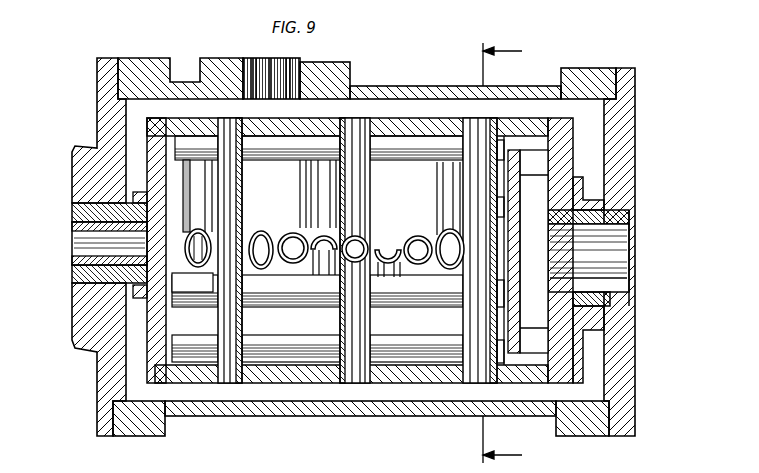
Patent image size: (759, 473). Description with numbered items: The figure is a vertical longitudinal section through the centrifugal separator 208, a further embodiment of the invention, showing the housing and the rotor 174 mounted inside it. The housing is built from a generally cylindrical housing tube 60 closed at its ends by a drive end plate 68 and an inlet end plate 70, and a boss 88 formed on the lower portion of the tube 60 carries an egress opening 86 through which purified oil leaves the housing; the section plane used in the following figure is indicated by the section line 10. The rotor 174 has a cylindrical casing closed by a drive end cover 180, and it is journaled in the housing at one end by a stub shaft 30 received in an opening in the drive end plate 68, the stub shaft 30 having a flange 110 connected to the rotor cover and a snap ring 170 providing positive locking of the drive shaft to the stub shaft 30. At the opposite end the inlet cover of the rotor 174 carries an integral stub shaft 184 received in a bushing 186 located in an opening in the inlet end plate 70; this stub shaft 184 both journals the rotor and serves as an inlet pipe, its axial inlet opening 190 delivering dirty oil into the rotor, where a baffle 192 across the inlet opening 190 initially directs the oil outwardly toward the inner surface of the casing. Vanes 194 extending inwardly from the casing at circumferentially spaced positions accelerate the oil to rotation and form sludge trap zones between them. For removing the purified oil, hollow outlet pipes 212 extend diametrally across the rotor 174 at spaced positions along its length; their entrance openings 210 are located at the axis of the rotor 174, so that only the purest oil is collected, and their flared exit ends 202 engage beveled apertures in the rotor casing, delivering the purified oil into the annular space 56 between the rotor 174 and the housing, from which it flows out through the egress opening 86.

The section line 10- 10 is at (515, 258).
The stub shaft 30 is at (88, 284).
The annular space 56 is at (364, 238).
The housing tube 60 is at (418, 88).
The drive end plate 68 is at (105, 110).
The inlet end plate 70 is at (630, 190).
The egress opening 86 is at (278, 72).
The boss 88 is at (340, 66).
The flange 110 is at (147, 178).
The snap ring 170 is at (112, 264).
The rotor 174 is at (306, 386).
The drive end cover 180 is at (152, 120).
The stub shaft 184 is at (624, 279).
The bushing 186 is at (82, 202).
The axial inlet opening 190 is at (622, 254).
The baffle 192 is at (514, 262).
The vanes 194 is at (300, 194).
The exit ends 202 is at (240, 121).
The centrifugal separator 208 is at (638, 38).
The entrance openings 210 is at (186, 263).
The outlet pipes 212 is at (244, 170).